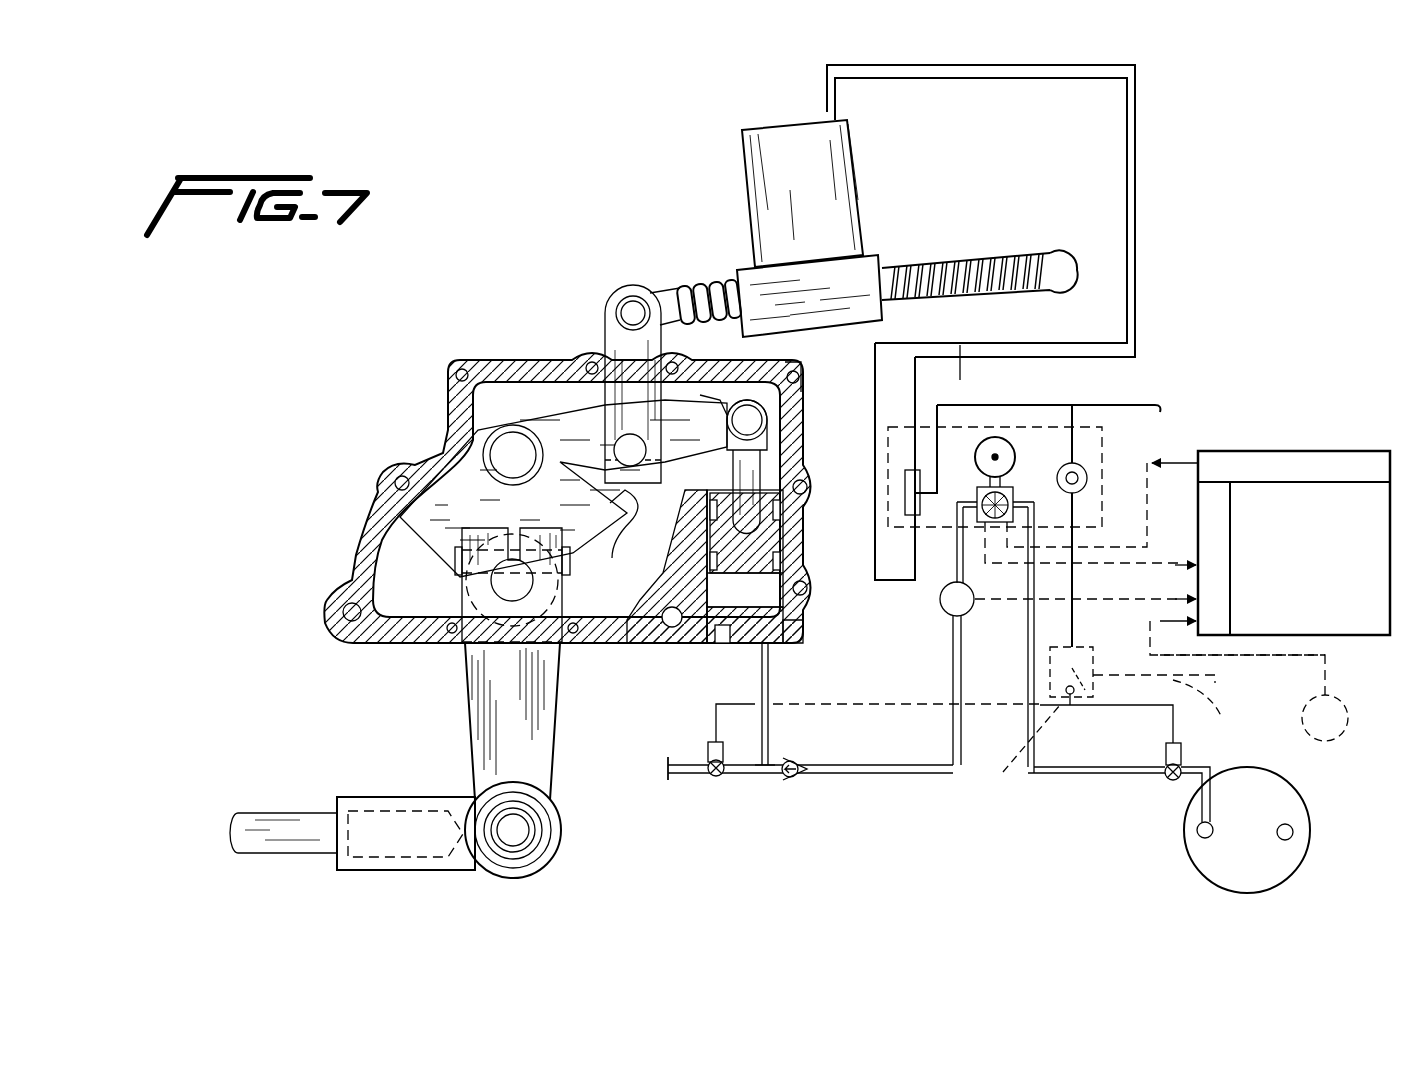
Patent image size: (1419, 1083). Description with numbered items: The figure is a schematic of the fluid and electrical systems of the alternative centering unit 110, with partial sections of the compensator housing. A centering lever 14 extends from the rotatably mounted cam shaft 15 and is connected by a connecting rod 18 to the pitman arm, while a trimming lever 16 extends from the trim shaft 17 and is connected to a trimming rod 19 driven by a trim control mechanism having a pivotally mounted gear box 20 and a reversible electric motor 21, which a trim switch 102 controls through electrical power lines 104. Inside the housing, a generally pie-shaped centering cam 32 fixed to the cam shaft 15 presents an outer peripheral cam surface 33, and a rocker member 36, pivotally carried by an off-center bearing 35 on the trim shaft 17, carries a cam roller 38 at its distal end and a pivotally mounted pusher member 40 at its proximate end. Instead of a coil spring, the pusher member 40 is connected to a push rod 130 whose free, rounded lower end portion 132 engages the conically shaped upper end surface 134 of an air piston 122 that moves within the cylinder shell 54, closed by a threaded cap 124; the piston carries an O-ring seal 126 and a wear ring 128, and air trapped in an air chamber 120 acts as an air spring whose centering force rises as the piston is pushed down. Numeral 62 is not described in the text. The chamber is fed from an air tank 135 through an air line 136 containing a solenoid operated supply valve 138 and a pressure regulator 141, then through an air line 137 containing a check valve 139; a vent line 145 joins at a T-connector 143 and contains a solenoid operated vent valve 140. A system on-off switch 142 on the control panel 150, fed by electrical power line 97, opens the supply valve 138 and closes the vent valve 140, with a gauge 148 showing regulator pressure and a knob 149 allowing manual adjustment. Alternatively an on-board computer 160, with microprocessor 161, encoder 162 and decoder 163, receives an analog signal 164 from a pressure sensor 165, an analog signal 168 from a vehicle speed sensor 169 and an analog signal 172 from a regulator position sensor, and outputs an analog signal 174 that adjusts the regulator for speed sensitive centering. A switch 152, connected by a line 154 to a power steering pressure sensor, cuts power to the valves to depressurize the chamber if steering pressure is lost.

The centering lever 14 is at (513, 760).
The cam shaft 15 is at (510, 605).
The trimming lever 16 is at (612, 320).
The trim shaft 17 is at (595, 405).
The connecting rod 18 is at (285, 805).
The trimming rod 19 is at (912, 258).
The gear box 20 is at (742, 272).
The reversible electric motor 21 is at (745, 165).
The centering cam 32 is at (560, 640).
The cam surface 33 is at (628, 530).
The off-center bearing 35 is at (650, 445).
The rocker member 36 is at (525, 425).
The cam roller 38 is at (460, 380).
The pusher member 40 is at (805, 392).
The cylinder shell 54 is at (813, 637).
The support block 62 is at (672, 600).
The electrical power line 97 is at (1150, 400).
The trim switch 102 is at (905, 490).
The electrical power lines 104 is at (1135, 100).
The centering unit 110 is at (392, 412).
The air chamber 120 is at (742, 645).
The air piston 122 is at (780, 560).
The threaded cap 124 is at (730, 650).
The O-ring seal 126 is at (807, 570).
The wear ring 128 is at (780, 522).
The push rod 130 is at (767, 457).
The lower end portion 132 is at (800, 645).
The upper end surface 134 is at (735, 400).
The air tank 135 is at (1300, 862).
The air line 136 is at (1118, 775).
The air line 137 is at (940, 775).
The supply valve 138 is at (1165, 760).
The check valve 139 is at (805, 780).
The vent valve 140 is at (706, 755).
The pressure regulator 141 is at (978, 510).
The system on-off switch 142 is at (1090, 470).
The T-connector 143 is at (768, 777).
The vent line 145 is at (680, 780).
The gauge 148 is at (960, 380).
The knob 149 is at (1013, 490).
The control panel 150 is at (968, 430).
The switch 152 is at (1035, 755).
The line 154 is at (1210, 717).
The on-board computer 160 is at (1303, 422).
The microprocessor 161 is at (1299, 612).
The encoder 162 is at (1198, 548).
The decoder 163 is at (1342, 452).
The analog signal 164 is at (1049, 663).
The pressure sensor 165 is at (940, 620).
The analog signal 168 is at (1262, 657).
The vehicle speed sensor 169 is at (1335, 738).
The analog signal 172 is at (1172, 568).
The analog signal 174 is at (1205, 452).